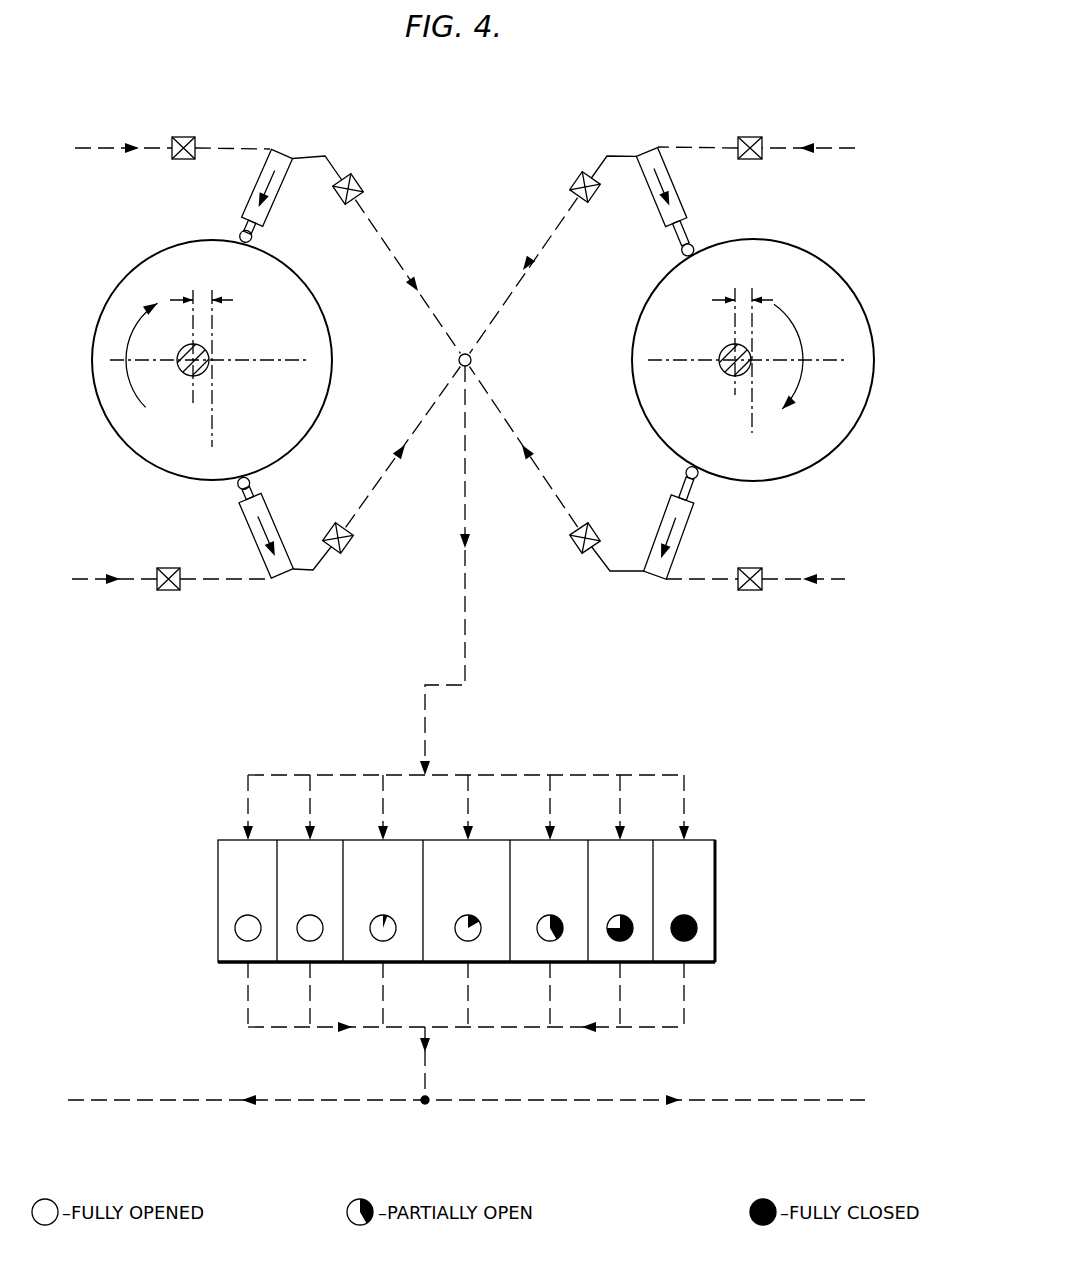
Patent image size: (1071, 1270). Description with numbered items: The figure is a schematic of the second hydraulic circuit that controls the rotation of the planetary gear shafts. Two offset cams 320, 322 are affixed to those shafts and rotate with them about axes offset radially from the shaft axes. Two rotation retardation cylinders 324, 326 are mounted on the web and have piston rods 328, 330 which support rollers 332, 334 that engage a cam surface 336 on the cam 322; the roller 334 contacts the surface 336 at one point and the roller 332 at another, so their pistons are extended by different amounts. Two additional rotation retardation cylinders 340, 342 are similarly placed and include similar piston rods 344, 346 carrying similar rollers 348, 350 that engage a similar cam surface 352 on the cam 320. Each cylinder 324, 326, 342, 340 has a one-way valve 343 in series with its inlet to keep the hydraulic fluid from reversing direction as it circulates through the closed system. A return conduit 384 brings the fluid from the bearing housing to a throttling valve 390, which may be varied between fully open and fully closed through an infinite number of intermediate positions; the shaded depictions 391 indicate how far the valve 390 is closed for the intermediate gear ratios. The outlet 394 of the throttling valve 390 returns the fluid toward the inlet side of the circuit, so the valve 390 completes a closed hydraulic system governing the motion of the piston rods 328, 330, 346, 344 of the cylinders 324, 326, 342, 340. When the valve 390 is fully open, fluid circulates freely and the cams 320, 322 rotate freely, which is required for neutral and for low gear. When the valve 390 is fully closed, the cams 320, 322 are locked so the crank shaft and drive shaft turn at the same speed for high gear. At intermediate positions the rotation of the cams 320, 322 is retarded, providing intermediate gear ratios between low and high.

The offset cam 320 is at (287, 333).
The offset cam 322 is at (850, 342).
The rotation retardation cylinder 324 is at (647, 148).
The rotation retardation cylinder 326 is at (658, 581).
The piston rod 328 is at (688, 228).
The piston rod 330 is at (693, 493).
The roller 332 is at (683, 253).
The roller 334 is at (687, 469).
The cam surface 336 is at (846, 243).
The rotation retardation cylinder 340 is at (286, 142).
The rotation retardation cylinder 342 is at (278, 582).
The one-way valve 343 is at (188, 137).
The piston rod 344 is at (258, 233).
The piston rod 346 is at (256, 486).
The roller 348 is at (256, 243).
The roller 350 is at (253, 478).
The cam surface 352 is at (358, 327).
The return conduit 384 is at (464, 610).
The throttling valve 390 is at (505, 901).
The shaded depictions 391 is at (548, 941).
The outlet 394 is at (428, 1076).